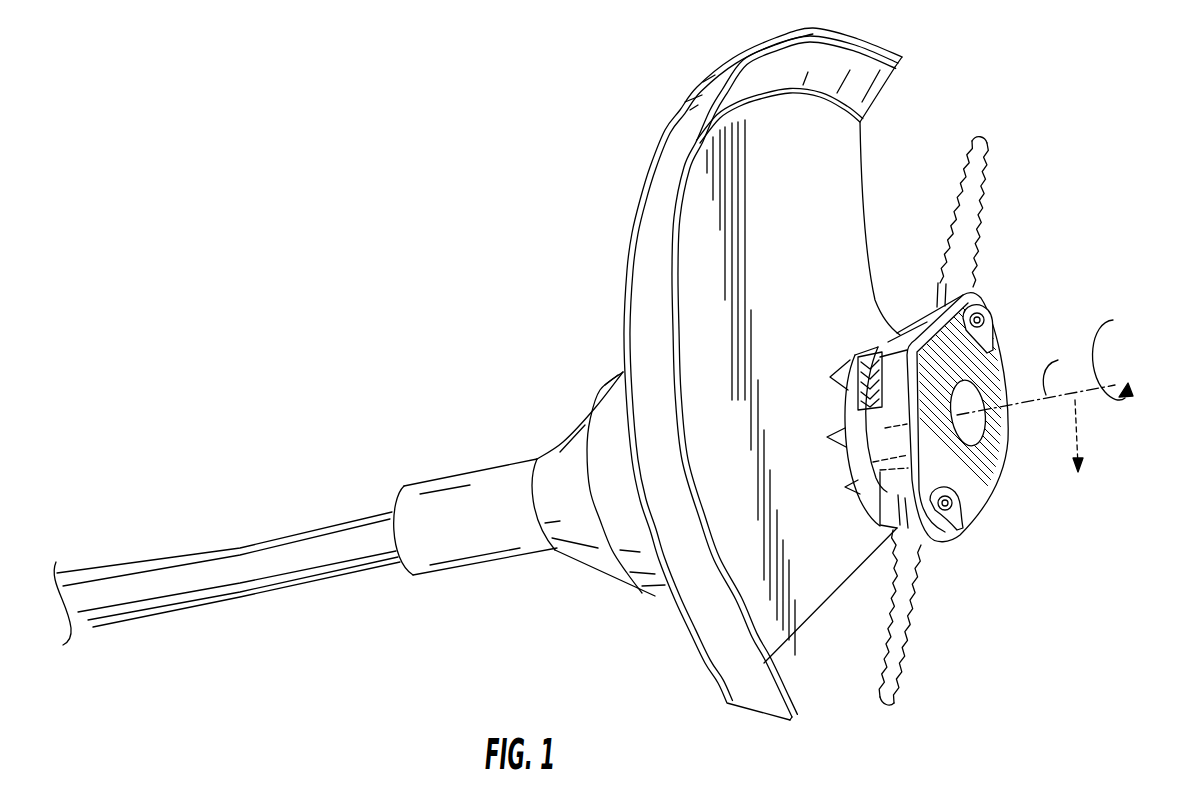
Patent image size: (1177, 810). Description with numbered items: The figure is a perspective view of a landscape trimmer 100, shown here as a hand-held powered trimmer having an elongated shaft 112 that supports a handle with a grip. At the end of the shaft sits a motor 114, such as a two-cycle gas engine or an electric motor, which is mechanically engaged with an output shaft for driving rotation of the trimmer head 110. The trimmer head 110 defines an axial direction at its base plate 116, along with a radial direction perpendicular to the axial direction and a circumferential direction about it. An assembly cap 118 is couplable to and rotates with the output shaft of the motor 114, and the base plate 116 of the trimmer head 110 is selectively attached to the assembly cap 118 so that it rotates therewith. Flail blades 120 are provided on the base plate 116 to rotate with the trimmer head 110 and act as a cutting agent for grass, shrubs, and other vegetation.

The landscape trimmer 100 is at (381, 236).
The trimmer head 110 is at (969, 419).
The elongated shaft 112 is at (203, 560).
The motor 114 is at (570, 447).
The base plate 116 is at (1000, 478).
The assembly cap 118 is at (858, 450).
The flail blades 120 is at (972, 211).